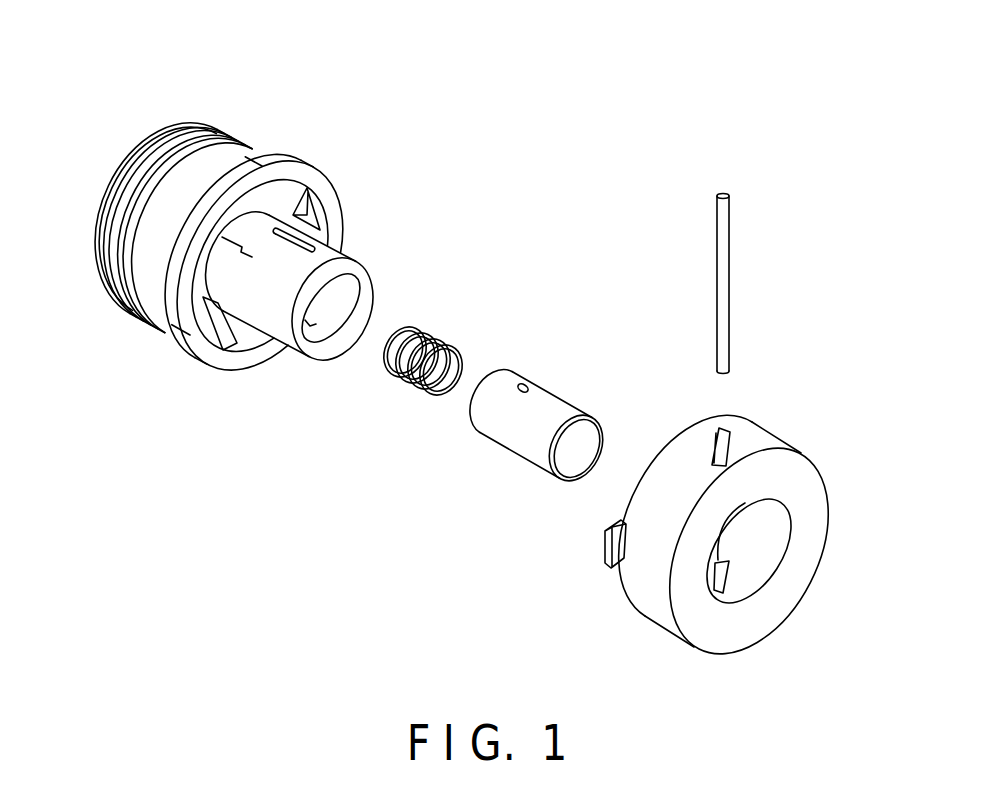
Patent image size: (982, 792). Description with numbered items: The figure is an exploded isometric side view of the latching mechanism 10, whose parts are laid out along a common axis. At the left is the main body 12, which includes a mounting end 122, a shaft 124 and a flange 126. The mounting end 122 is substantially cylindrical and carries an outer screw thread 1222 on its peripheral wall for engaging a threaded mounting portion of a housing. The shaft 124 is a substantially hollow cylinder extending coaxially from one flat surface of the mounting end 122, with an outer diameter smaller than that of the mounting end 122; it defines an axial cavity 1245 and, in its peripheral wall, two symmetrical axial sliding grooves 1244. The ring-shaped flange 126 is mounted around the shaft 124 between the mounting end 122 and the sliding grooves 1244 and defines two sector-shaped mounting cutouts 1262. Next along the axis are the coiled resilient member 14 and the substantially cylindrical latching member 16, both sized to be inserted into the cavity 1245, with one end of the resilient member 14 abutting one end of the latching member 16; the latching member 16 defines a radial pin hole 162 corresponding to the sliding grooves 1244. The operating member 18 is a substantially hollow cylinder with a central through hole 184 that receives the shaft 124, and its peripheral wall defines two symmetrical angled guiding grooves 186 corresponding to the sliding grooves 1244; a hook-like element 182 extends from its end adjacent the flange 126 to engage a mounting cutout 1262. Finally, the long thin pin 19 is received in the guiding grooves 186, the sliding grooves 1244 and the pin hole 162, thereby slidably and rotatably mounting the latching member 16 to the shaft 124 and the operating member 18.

The latching mechanism 10 is at (510, 51).
The main body 12 is at (173, 121).
The mounting end 122 is at (153, 265).
The outer screw thread 1222 is at (158, 172).
The shaft 124 is at (205, 205).
The flange 126 is at (228, 183).
The sliding groove 1244 is at (308, 237).
The cavity 1245 is at (332, 295).
The mounting cutout 1262 is at (310, 213).
The resilient member 14 is at (442, 343).
The latching member 16 is at (552, 417).
The pin hole 162 is at (523, 383).
The operating member 18 is at (793, 435).
The side tab 182 is at (669, 450).
The through hole 184 is at (758, 533).
The guiding groove 186 is at (730, 425).
The pin 19 is at (722, 273).